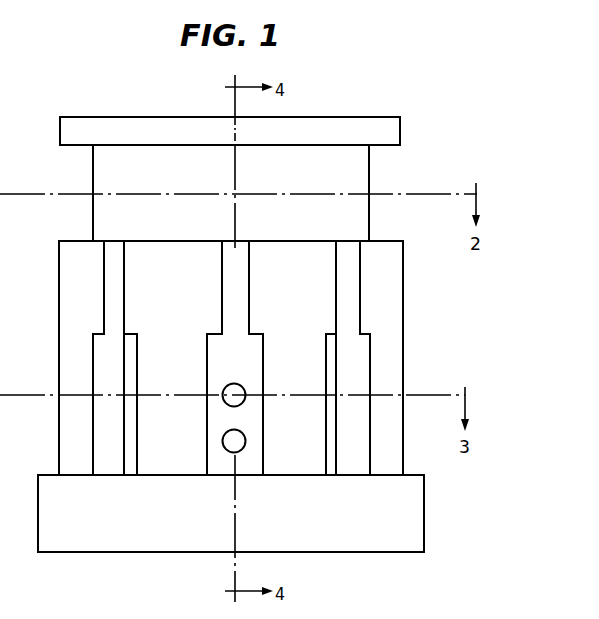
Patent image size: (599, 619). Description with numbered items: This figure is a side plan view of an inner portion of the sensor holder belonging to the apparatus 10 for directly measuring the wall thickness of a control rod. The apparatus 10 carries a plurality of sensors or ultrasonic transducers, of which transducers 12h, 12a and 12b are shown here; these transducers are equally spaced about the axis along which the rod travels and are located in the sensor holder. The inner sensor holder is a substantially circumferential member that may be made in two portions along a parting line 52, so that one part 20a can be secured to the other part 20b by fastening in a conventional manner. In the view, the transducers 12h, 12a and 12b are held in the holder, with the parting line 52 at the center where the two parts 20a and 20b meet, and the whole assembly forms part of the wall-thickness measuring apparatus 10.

The apparatus for directly measuring wall thickness of a control rod 10 is at (460, 152).
The inner sensor holder part 20a is at (67, 128).
The inner sensor holder part 20b is at (312, 128).
The parting line 52 is at (233, 131).
The ultrasonic transducer 12h is at (105, 447).
The ultrasonic transducer 12a is at (217, 458).
The ultrasonic transducer 12b is at (361, 452).